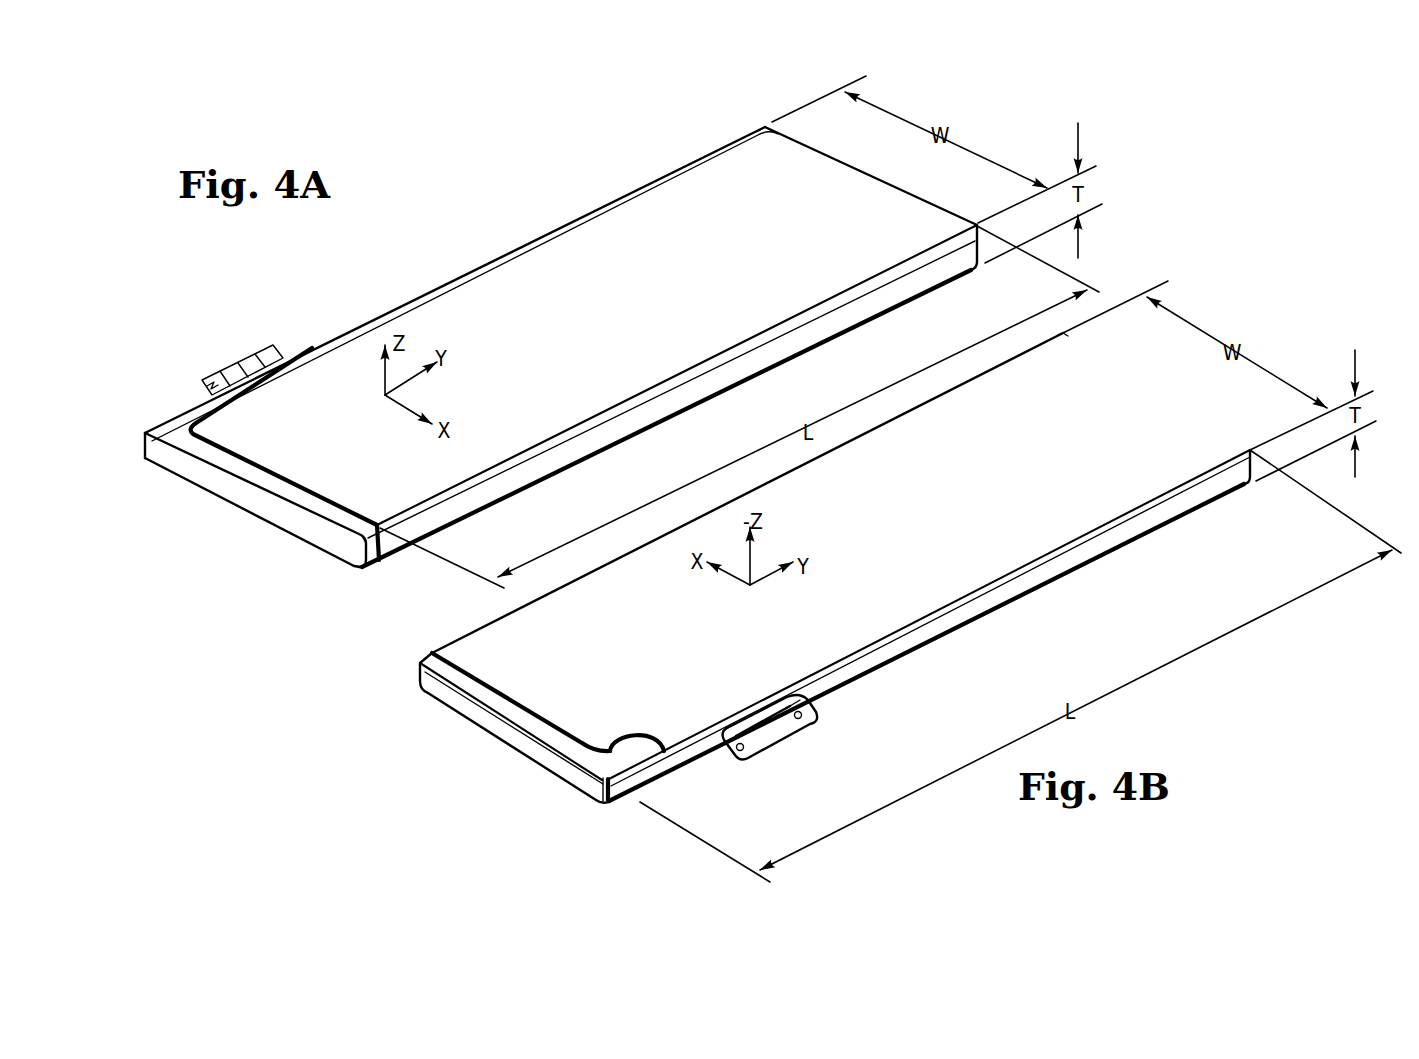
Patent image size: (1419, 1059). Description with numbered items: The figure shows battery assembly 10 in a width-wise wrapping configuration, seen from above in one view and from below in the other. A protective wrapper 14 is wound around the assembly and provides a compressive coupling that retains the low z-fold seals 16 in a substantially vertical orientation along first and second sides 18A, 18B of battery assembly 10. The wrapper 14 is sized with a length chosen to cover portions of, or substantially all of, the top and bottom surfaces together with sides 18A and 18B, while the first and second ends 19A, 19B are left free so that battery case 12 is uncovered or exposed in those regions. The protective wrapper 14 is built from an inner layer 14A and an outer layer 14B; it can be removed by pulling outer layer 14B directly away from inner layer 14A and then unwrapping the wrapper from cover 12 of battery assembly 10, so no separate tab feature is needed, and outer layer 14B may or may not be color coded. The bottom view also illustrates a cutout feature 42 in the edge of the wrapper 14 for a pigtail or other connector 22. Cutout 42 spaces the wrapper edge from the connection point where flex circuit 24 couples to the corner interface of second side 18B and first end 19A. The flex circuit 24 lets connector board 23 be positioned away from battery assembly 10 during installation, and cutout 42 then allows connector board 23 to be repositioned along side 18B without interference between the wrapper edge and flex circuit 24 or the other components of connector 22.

In FIG. 4A, the battery assembly 10 is at (555, 346).
In FIG. 4B, the battery assembly 10 is at (819, 567).
In FIG. 4A, the battery case 12 is at (232, 466).
In FIG. 4B, the battery case 12 is at (480, 686).
In FIG. 4A, the protective wrapper 14 is at (800, 166).
In FIG. 4B, the protective wrapper 14 is at (1105, 384).
In FIG. 4A, the inner layer 14A is at (589, 217).
In FIG. 4A, the outer layer 14B is at (557, 250).
In FIG. 4A, the low z-fold seal 16 is at (766, 122).
In FIG. 4B, the low z-fold seal 16 is at (1067, 330).
In FIG. 4A, the first side 18A is at (369, 318).
In FIG. 4B, the first side 18A is at (487, 614).
In FIG. 4A, the second side 18B is at (858, 327).
In FIG. 4B, the second side 18B is at (1132, 541).
In FIG. 4A, the first end 19A is at (250, 512).
In FIG. 4B, the first end 19A is at (490, 735).
In FIG. 4A, the second end 19B is at (878, 174).
In FIG. 4B, the second end 19B is at (1180, 400).
In FIG. 4A, the connector 22 is at (250, 342).
In FIG. 4B, the connector 22 is at (796, 756).
In FIG. 4B, the connector board 23 is at (798, 711).
In FIG. 4B, the flex circuit 24 is at (725, 774).
In FIG. 4B, the cutout feature 42 is at (636, 748).